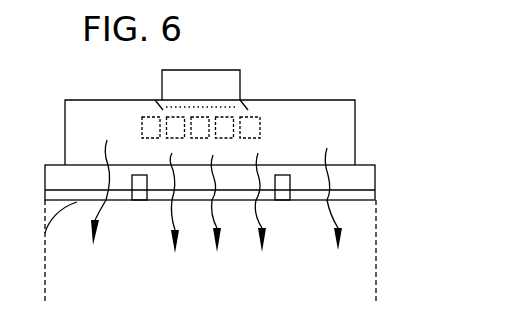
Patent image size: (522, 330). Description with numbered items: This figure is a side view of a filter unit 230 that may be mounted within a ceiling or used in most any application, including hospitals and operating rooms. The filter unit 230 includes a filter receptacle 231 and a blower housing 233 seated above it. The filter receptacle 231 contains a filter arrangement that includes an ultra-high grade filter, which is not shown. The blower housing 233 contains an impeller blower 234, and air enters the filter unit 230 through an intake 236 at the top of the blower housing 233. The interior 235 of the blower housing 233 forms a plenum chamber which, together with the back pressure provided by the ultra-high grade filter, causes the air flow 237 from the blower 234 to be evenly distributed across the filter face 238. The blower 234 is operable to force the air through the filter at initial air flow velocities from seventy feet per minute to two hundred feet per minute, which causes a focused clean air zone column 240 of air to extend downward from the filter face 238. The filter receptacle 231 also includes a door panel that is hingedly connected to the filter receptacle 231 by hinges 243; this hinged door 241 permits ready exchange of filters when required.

The filter unit 230 is at (309, 76).
The filter receptacle 231 is at (376, 185).
The blower housing 233 is at (356, 118).
The impeller blower 234 is at (268, 127).
The interior 235 is at (338, 137).
The intake 236 is at (223, 70).
The air flow 237 is at (100, 212).
The filter face 238 is at (265, 201).
The focused clean air zone column 240 is at (378, 242).
The hinged door 241 is at (44, 233).
The hinges 243 is at (142, 175).